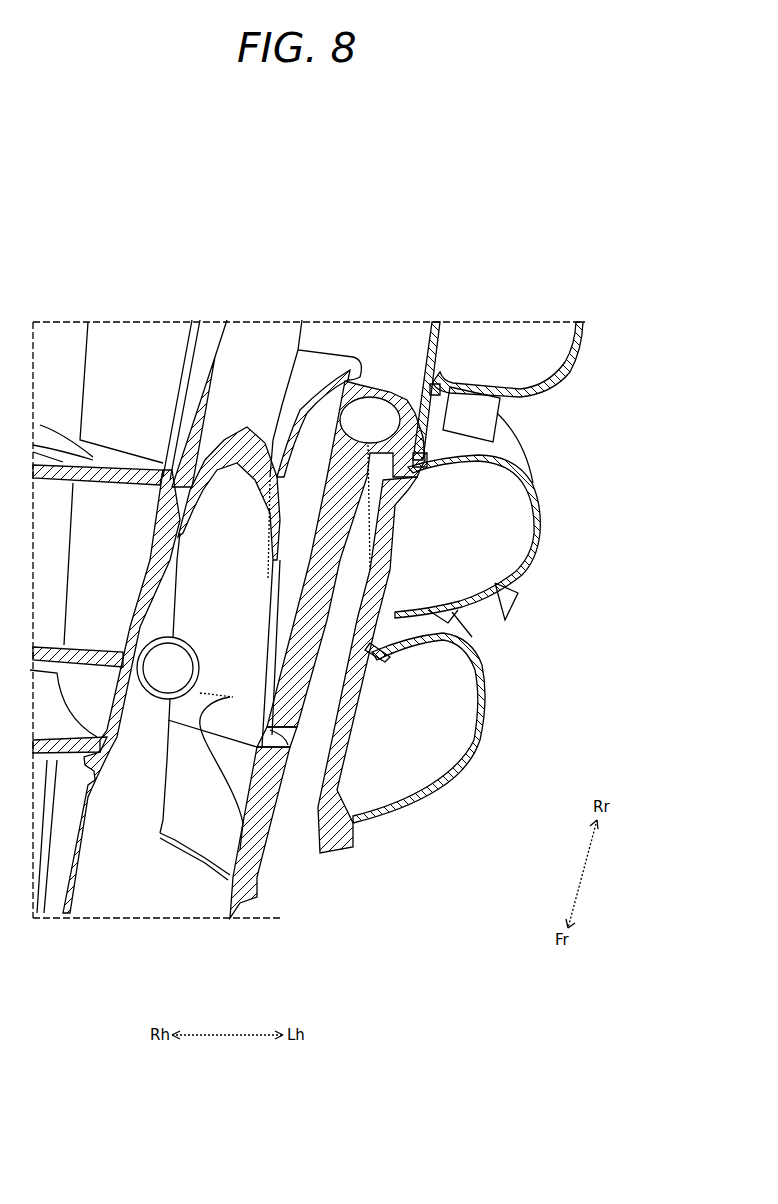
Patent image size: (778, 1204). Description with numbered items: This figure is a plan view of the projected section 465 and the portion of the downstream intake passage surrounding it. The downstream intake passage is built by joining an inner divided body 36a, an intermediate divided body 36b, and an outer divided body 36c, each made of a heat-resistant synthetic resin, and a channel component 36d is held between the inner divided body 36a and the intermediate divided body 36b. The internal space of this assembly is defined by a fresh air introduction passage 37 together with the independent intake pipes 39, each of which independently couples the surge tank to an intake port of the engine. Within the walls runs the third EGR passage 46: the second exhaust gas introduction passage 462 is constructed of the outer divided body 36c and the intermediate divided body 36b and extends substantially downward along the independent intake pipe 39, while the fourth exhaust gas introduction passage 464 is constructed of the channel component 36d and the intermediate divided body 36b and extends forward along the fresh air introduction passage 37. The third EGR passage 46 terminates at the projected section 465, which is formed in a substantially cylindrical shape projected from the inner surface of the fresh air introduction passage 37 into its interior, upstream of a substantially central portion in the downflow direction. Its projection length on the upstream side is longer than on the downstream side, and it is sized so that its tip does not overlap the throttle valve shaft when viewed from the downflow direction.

The inner divided body 36a is at (73, 877).
The intermediate divided body 36b is at (307, 950).
The outer divided body 36c is at (487, 680).
The channel component 36d is at (354, 729).
The fresh air introduction passage 37 is at (139, 838).
The independent intake pipe 39 is at (505, 353).
The third EGR passage 46 is at (379, 590).
The second exhaust gas introduction passage 462 is at (405, 480).
The fourth exhaust gas introduction passage 464 is at (277, 433).
The projected section 465 is at (153, 700).